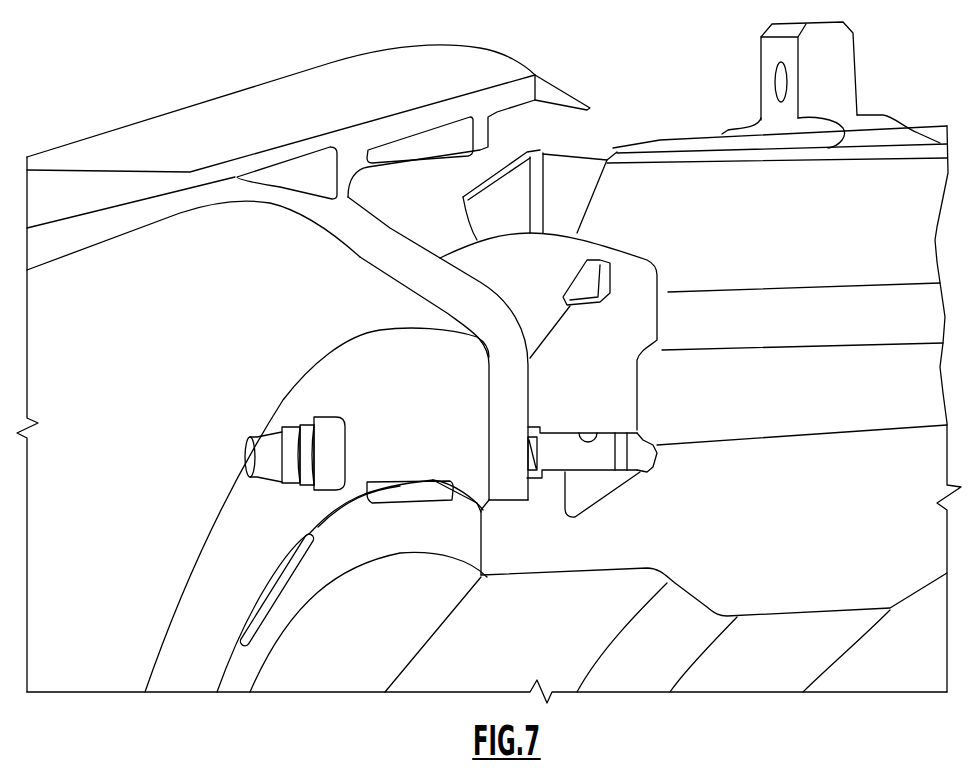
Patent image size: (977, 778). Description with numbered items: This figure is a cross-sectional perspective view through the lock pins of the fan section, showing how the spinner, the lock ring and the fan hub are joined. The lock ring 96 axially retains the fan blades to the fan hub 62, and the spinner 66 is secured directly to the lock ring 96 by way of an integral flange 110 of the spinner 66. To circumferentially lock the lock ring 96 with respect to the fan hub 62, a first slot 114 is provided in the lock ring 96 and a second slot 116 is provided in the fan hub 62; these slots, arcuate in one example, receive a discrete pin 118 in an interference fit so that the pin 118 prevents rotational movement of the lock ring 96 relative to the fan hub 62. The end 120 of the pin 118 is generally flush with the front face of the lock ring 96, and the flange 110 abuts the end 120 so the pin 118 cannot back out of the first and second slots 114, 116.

The fan hub 62 is at (863, 460).
The spinner 66 is at (137, 210).
The lock ring 96 is at (652, 321).
The flange 110 is at (502, 377).
The first slot 114 is at (610, 432).
The second slot 116 is at (556, 466).
The pin 118 is at (598, 461).
The end of pin 120 is at (528, 452).